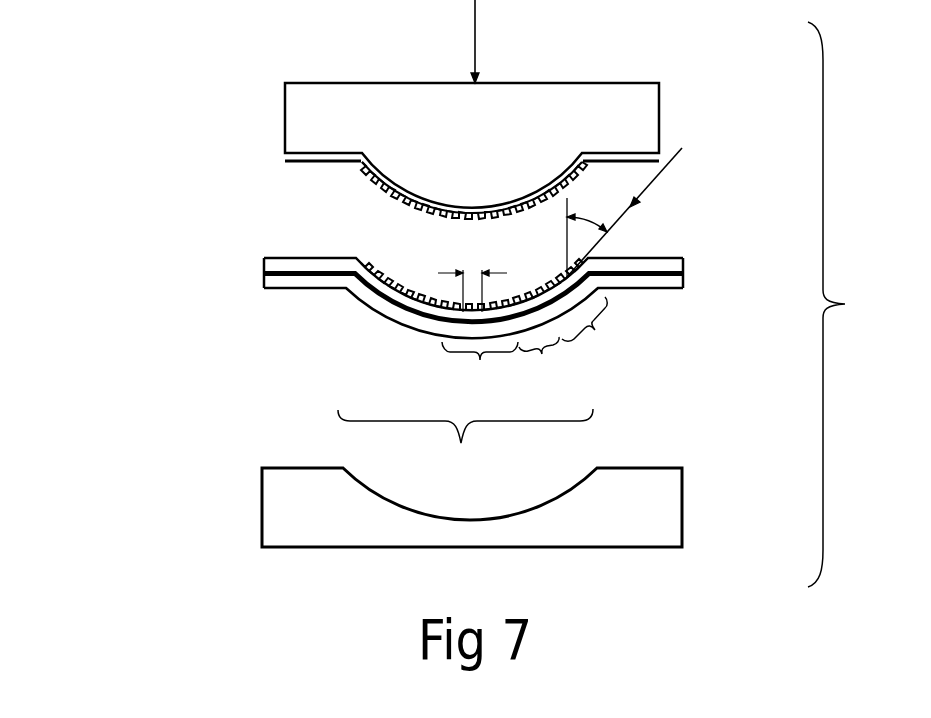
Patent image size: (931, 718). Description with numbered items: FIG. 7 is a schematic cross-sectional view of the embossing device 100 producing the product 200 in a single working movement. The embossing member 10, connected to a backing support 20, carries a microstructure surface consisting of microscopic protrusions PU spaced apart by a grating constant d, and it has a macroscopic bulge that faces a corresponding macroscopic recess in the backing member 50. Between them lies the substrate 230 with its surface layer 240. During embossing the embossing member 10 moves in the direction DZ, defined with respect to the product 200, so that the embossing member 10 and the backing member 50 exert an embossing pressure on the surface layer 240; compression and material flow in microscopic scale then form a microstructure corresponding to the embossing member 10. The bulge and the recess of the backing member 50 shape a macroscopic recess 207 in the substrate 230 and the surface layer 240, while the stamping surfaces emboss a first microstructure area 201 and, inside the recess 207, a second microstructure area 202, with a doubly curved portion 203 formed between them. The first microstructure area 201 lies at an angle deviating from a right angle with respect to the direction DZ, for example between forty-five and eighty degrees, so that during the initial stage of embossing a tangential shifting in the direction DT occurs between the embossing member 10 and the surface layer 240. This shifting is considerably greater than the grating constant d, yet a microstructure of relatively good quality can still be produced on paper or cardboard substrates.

The embossing member 10 is at (282, 158).
The backing support 20 is at (285, 115).
The backing member 50 is at (682, 497).
The embossing device 100 is at (147, 538).
The product 200 is at (471, 276).
The first microstructure area 201 is at (598, 328).
The second microstructure area 202 is at (480, 373).
The doubly curved portion 203 is at (545, 362).
The recess 207 is at (465, 442).
The substrate 230 is at (683, 283).
The surface layer 240 is at (683, 265).
The direction of movement DZ is at (457, 41).
The tangential shifting direction DT is at (628, 212).
The microscopic protrusions PU is at (363, 262).
The grating constant d is at (472, 278).